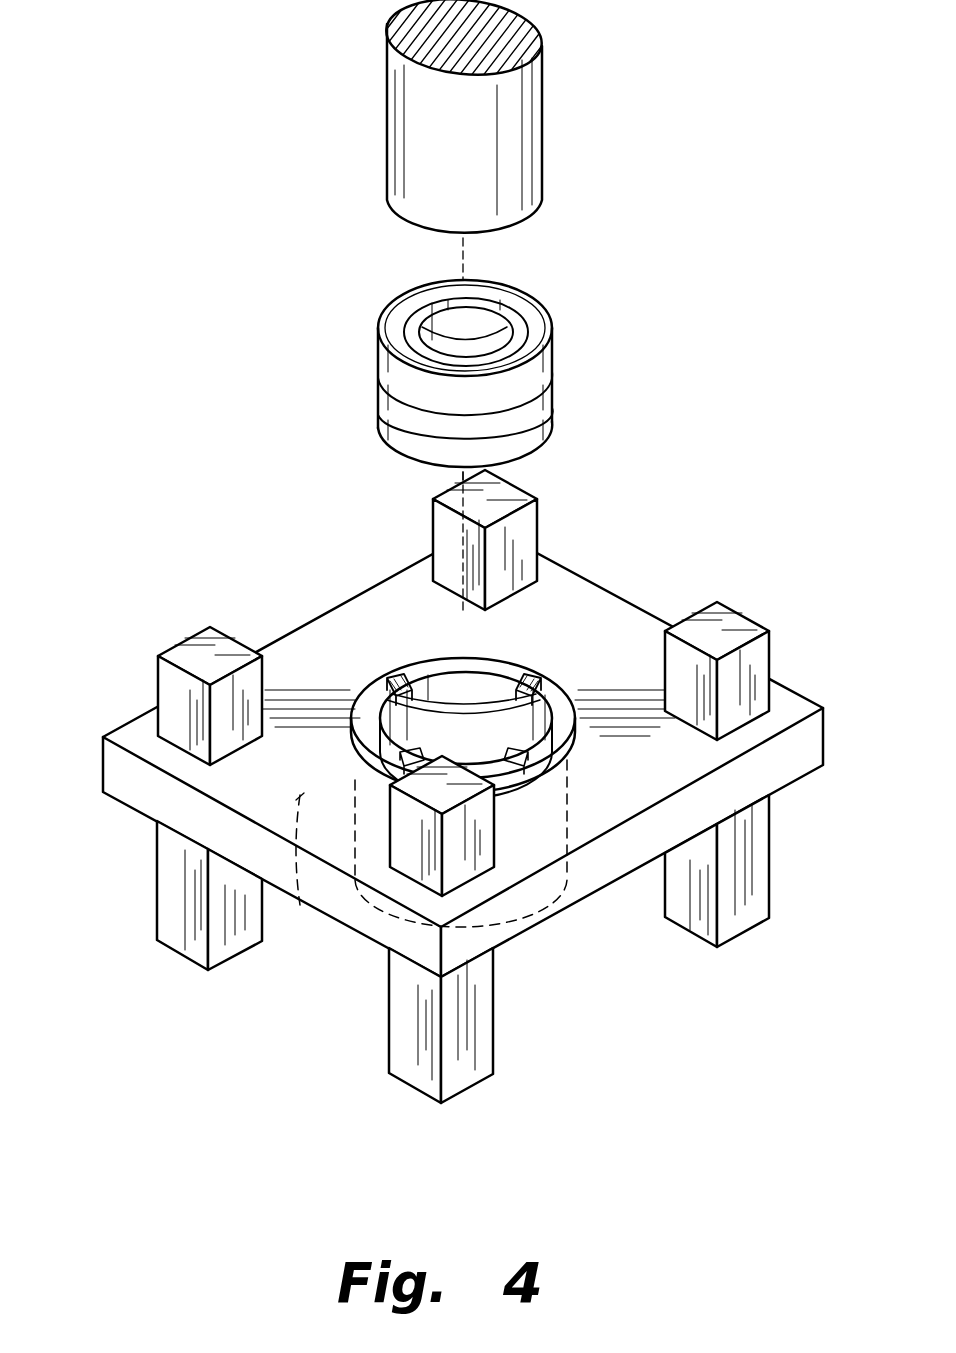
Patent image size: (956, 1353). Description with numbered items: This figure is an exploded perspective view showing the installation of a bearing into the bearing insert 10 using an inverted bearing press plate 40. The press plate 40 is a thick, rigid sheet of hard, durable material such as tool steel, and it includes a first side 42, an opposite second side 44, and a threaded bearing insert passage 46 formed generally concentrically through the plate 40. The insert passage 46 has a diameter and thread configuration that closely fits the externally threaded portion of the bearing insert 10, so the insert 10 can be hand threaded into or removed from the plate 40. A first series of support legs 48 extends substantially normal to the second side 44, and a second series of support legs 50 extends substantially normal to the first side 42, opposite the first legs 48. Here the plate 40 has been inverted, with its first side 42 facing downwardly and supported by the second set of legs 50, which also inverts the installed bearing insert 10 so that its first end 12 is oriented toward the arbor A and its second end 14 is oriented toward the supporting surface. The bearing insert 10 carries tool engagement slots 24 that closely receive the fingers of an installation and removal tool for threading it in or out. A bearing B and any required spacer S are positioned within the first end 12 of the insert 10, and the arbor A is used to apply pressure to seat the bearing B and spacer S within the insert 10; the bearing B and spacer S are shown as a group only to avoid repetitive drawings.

The arbor A is at (387, 134).
The bearing B is at (378, 325).
The spacer S is at (378, 388).
The bearing insert 10 is at (506, 755).
The first end 12 is at (455, 695).
The second end 14 is at (533, 930).
The tool engagement slots 24 is at (518, 685).
The bearing press plate 40 is at (622, 883).
The first side 42 is at (300, 905).
The second side 44 is at (345, 640).
The threaded bearing insert passage 46 is at (357, 740).
The first series of support legs 48 is at (540, 532).
The second series of support legs 50 is at (157, 902).